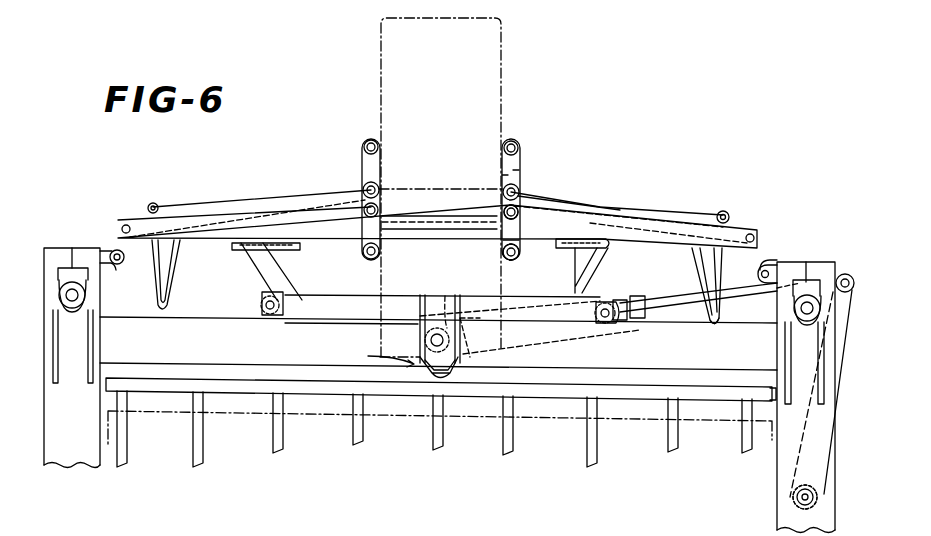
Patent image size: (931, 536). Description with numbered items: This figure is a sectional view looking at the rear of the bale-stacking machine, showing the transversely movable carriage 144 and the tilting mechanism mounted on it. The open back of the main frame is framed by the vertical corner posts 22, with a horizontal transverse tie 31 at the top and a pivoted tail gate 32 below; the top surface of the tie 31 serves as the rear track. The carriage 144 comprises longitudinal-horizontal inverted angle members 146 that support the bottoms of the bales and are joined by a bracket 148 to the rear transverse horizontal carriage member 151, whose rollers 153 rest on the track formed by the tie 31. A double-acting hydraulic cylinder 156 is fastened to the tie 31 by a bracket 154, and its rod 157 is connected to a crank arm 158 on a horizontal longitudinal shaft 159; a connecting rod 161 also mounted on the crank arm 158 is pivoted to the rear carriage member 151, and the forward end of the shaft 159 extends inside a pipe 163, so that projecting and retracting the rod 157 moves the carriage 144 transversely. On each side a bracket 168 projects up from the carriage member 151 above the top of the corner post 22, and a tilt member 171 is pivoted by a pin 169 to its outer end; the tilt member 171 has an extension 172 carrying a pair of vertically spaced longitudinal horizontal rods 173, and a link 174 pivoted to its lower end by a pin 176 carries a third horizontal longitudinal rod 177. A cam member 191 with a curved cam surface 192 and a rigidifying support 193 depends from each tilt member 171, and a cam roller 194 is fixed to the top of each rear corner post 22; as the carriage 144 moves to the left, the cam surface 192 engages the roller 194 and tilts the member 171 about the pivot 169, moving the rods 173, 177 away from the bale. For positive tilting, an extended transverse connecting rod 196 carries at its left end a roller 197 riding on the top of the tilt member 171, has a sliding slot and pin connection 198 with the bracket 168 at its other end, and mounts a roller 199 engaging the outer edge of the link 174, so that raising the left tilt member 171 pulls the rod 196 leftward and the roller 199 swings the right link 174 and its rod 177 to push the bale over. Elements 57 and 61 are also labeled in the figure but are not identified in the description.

The vertical corner post 22 is at (73, 449).
The horizontal transverse tie 31 is at (136, 349).
The pivoted tail gate 32 is at (240, 392).
The lift cable 57 is at (88, 380).
The pulley 61 is at (58, 316).
The transversely movable carriage 144 is at (377, 355).
The inverted angle member 146 is at (447, 382).
The bracket 148 is at (436, 297).
The rear transverse horizontal carriage member 151 is at (362, 297).
The roller 153 is at (262, 305).
The bracket 154 is at (452, 297).
The double-acting hydraulic cylinder 156 is at (540, 345).
The rod 157 is at (716, 326).
The crank arm 158 is at (835, 340).
The horizontal longitudinal shaft 159 is at (797, 495).
The connecting rod 161 is at (680, 316).
The pipe 163 is at (800, 503).
The bracket 168 is at (648, 246).
The pin 169 is at (756, 238).
The tilt member 171 is at (570, 197).
The extension 172 is at (516, 170).
The longitudinal horizontal rod 173 is at (504, 174).
The link 174 is at (502, 240).
The pin 176 is at (504, 212).
The third horizontal longitudinal rod 177 is at (502, 256).
The cam member 191 is at (700, 268).
The curved cam surface 192 is at (758, 262).
The rigidifying support 193 is at (706, 290).
The cam roller 194 is at (108, 272).
The extended transverse connecting rod 196 is at (178, 202).
The roller 197 is at (155, 202).
The sliding slot and pin connection 198 is at (302, 283).
The roller 199 is at (362, 256).